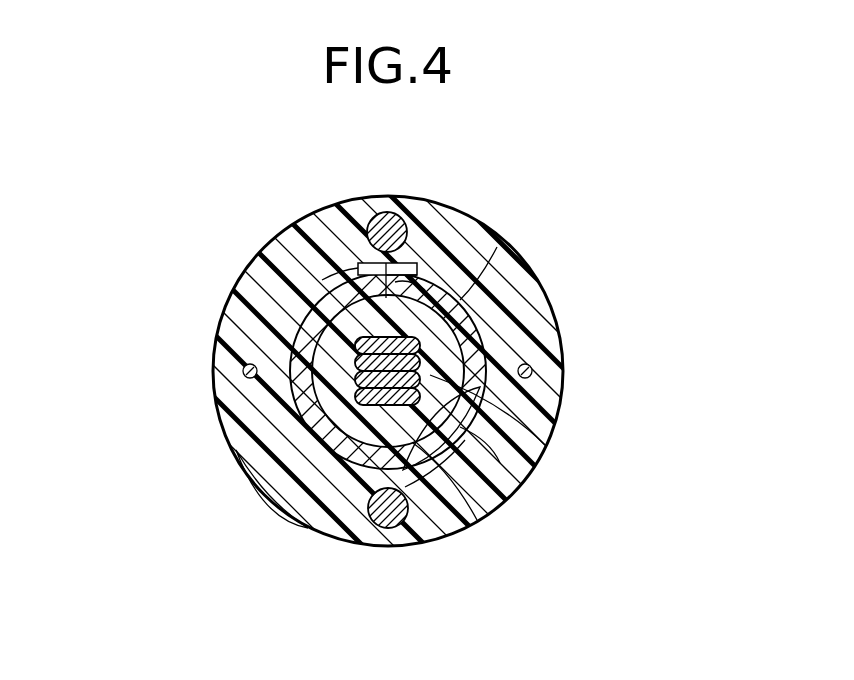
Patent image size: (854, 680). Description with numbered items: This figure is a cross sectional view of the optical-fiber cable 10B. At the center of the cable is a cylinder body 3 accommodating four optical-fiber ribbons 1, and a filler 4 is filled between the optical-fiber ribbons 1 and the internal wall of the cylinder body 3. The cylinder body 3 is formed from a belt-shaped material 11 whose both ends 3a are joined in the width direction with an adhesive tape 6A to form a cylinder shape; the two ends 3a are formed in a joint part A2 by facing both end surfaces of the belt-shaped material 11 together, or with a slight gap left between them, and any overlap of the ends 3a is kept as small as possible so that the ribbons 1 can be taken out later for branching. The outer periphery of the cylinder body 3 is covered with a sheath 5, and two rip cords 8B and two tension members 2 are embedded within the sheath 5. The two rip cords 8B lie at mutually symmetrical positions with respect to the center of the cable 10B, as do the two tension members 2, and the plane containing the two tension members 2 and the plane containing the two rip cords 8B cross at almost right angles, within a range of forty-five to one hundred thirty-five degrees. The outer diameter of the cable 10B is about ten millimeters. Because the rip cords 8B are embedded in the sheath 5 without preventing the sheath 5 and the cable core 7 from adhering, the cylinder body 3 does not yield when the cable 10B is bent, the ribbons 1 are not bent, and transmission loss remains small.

The optical-fiber cable 10B is at (422, 372).
The sheath 5 is at (540, 427).
The cable core 7 is at (400, 430).
The cylinder body 3 is at (478, 448).
The belt-shaped material 11 is at (390, 390).
The optical-fiber ribbons 1 is at (462, 492).
The filler 4 is at (465, 527).
The adhesive tape 6A is at (365, 268).
The ends of belt-shaped material 3a is at (330, 292).
The joint part A2 is at (497, 247).
The tension members 2 is at (380, 213).
The rip cords 8B is at (243, 371).